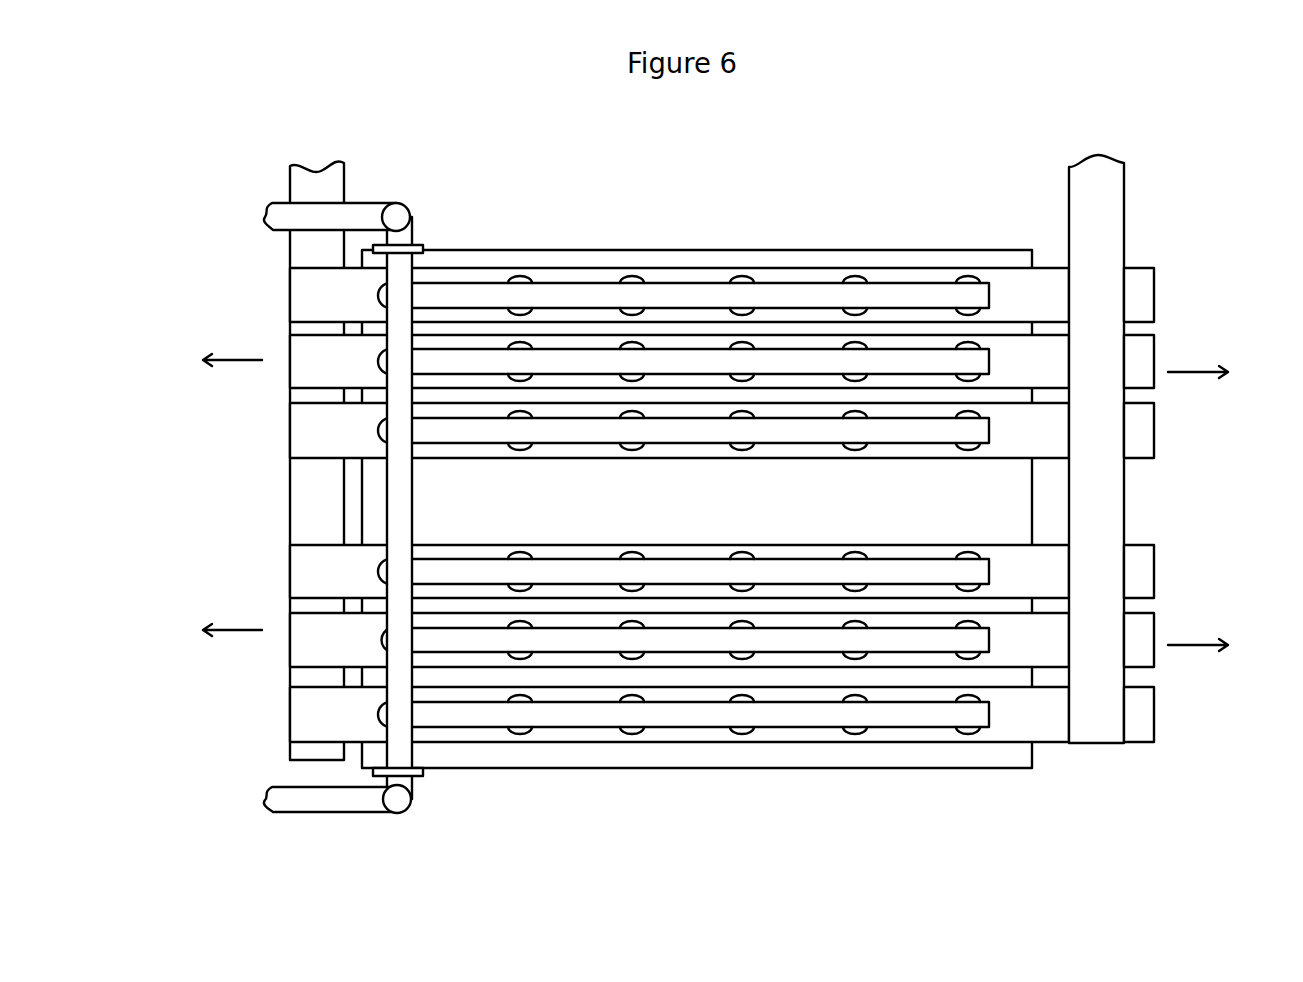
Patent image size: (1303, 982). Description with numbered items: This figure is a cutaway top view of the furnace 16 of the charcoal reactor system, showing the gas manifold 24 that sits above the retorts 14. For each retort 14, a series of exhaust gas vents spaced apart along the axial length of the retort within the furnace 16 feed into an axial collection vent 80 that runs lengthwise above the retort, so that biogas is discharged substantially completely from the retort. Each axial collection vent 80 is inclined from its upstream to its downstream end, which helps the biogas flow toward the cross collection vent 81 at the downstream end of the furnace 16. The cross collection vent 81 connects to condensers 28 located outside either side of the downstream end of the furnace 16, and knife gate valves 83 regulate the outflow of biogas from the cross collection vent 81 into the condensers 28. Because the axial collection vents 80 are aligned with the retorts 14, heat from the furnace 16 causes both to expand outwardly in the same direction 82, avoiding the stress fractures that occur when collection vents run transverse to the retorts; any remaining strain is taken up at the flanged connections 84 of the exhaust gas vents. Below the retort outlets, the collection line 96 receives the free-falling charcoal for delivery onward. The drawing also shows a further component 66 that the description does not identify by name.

The retort 14 is at (1154, 282).
The furnace 16 is at (937, 250).
The manifold 24 is at (677, 732).
The condenser 28 is at (364, 203).
The outlet pipe 66 is at (1124, 218).
The axial collection vent 80 is at (680, 283).
The cross collection vent 81 is at (387, 487).
The direction 82 is at (716, 503).
The knife gate valve 83 is at (424, 246).
The flanged connection 84 is at (522, 278).
The collection line 96 is at (290, 184).